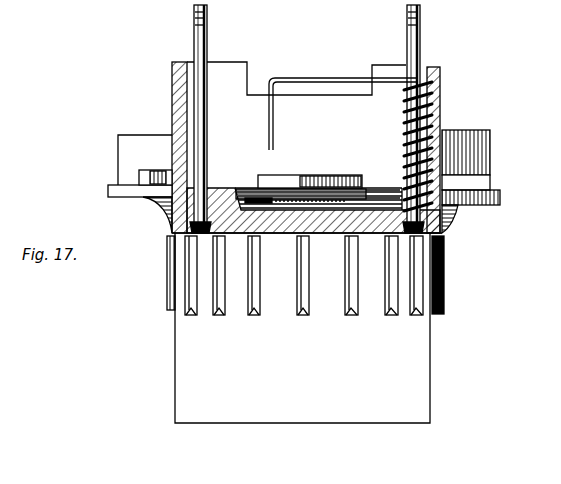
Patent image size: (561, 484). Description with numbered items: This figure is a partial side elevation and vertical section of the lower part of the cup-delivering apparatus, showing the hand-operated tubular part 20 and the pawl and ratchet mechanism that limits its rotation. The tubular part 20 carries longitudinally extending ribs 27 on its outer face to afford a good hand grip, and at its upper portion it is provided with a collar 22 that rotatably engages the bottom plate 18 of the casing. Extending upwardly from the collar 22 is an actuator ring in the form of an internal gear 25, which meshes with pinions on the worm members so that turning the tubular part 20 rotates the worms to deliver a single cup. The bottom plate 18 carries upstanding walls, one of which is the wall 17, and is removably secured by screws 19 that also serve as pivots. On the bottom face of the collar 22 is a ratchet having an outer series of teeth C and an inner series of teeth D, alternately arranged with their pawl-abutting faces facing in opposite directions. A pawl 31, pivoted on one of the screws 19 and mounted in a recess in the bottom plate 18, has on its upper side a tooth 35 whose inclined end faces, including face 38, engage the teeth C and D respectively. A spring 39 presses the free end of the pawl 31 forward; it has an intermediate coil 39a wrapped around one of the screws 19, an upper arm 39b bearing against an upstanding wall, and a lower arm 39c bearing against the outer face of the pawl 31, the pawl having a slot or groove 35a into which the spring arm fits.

The upstanding wall 17 is at (442, 86).
The bottom plate 18 is at (172, 233).
The screws 19 is at (194, 40).
The tubular part 20 is at (305, 328).
The collar 22 is at (140, 198).
The internal gear 25 is at (118, 160).
The ribs 27 is at (310, 310).
The pawl 31 is at (298, 212).
The tooth 35 is at (345, 188).
The slot or groove 35a is at (252, 197).
The inclined end face 38 is at (320, 175).
The spring 39 is at (436, 119).
The intermediate coil 39a is at (400, 118).
The upper arm 39b is at (340, 77).
The lower arm 39c is at (380, 188).
The outer series of teeth C is at (490, 186).
The inner series of teeth D is at (152, 170).